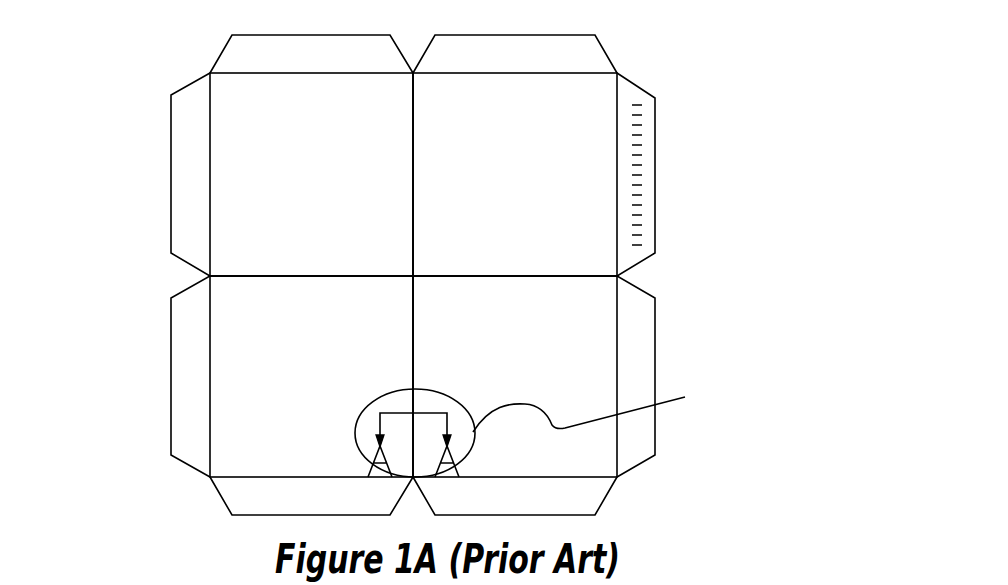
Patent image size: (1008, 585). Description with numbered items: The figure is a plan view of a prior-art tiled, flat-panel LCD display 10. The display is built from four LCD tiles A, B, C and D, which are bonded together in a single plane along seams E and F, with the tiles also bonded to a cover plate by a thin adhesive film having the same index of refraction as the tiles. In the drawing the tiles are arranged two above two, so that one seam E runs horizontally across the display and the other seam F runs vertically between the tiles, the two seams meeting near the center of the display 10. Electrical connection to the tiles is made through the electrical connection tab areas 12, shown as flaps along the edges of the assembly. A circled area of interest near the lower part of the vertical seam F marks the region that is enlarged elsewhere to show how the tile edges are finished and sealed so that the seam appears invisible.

The tiled, flat-panel LCD display 10 is at (428, 275).
The electrical connection tab areas 12 is at (362, 55).
The LCD tile A is at (311, 174).
The LCD tile B is at (515, 174).
The LCD tile C is at (515, 376).
The LCD tile D is at (311, 376).
The seam E is at (573, 277).
The seam F is at (413, 257).